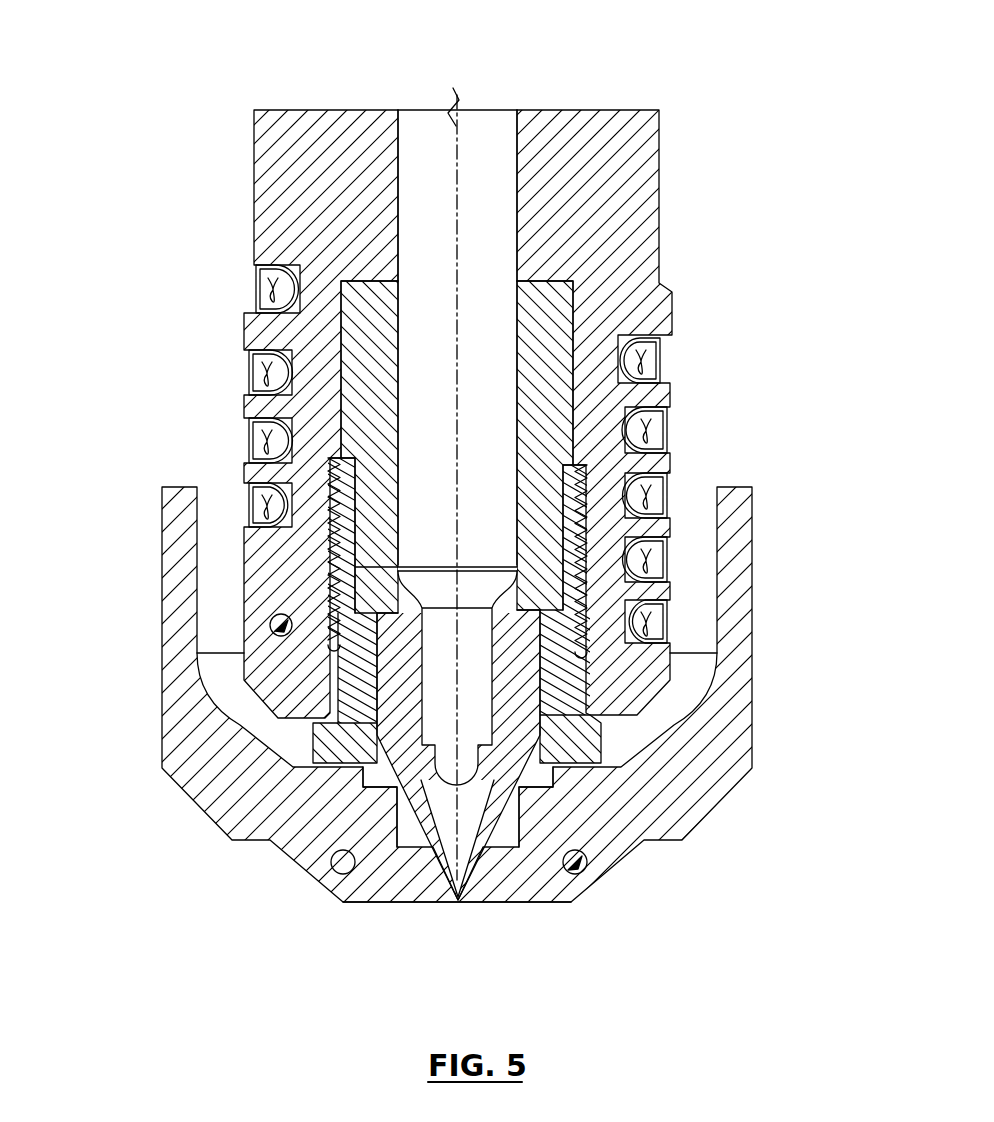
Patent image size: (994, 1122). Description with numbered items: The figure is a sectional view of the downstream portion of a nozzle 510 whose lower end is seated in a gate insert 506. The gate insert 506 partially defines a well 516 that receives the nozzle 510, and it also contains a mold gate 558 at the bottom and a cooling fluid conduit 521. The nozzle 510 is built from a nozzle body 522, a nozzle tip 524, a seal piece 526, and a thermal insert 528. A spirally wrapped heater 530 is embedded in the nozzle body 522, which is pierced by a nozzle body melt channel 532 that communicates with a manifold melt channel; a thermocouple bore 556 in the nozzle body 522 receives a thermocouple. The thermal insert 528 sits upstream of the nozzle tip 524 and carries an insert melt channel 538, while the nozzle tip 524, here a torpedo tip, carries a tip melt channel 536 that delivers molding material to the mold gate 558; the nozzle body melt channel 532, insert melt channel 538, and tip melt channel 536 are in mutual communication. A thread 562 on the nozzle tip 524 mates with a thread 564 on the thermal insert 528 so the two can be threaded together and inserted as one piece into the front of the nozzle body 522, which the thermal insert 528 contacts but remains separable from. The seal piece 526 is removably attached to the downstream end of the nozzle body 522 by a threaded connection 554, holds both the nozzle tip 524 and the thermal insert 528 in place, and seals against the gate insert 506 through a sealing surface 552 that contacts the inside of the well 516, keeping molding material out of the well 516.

The gate insert 506 is at (615, 848).
The nozzle 510 is at (574, 82).
The well 516 is at (705, 546).
The cooling fluid conduit 521 is at (572, 875).
The nozzle body 522 is at (614, 200).
The nozzle tip 524 is at (580, 690).
The seal piece 526 is at (548, 772).
The thermal insert 528 is at (552, 380).
The heater 530 is at (650, 358).
The nozzle body melt channel 532 is at (480, 222).
The tip melt channel 536 is at (480, 677).
The insert melt channel 538 is at (480, 442).
The sealing surface 552 is at (578, 787).
The threaded connection 554 is at (585, 640).
The thermocouple bore 556 is at (268, 625).
The mold gate 558 is at (456, 908).
The thread 562 is at (397, 527).
The thread 564 is at (388, 560).